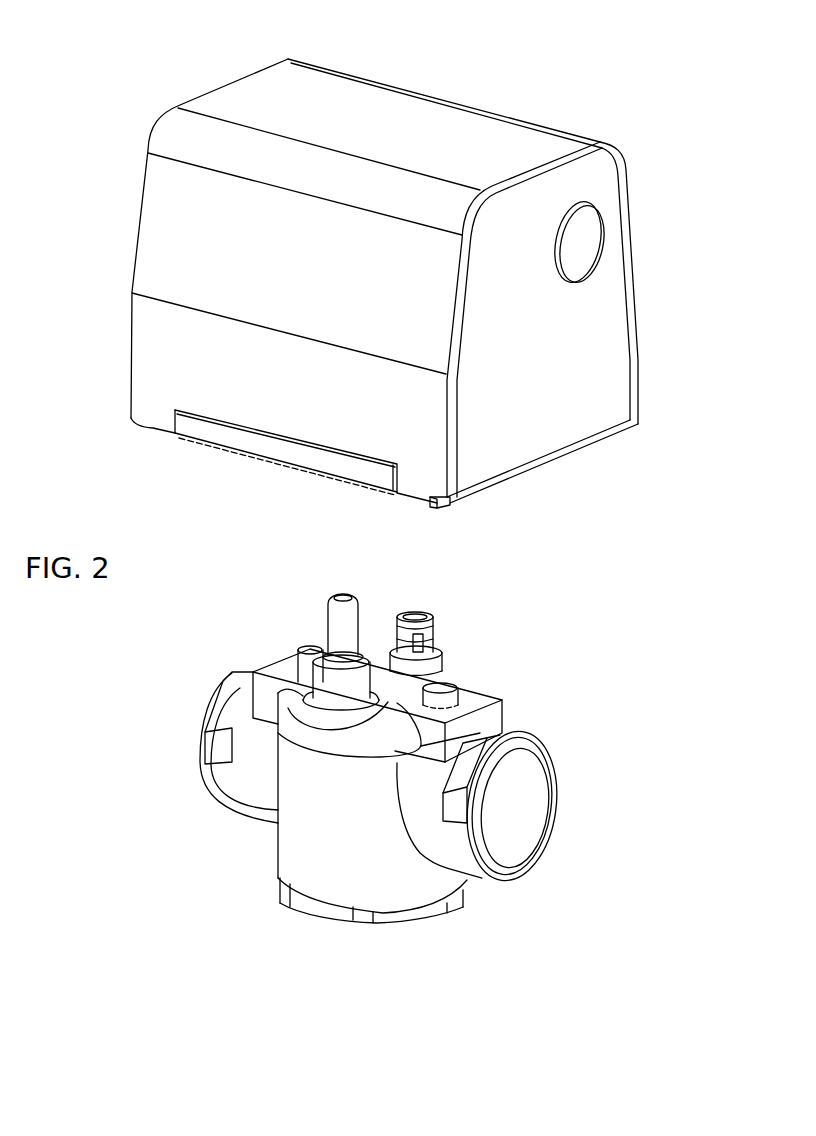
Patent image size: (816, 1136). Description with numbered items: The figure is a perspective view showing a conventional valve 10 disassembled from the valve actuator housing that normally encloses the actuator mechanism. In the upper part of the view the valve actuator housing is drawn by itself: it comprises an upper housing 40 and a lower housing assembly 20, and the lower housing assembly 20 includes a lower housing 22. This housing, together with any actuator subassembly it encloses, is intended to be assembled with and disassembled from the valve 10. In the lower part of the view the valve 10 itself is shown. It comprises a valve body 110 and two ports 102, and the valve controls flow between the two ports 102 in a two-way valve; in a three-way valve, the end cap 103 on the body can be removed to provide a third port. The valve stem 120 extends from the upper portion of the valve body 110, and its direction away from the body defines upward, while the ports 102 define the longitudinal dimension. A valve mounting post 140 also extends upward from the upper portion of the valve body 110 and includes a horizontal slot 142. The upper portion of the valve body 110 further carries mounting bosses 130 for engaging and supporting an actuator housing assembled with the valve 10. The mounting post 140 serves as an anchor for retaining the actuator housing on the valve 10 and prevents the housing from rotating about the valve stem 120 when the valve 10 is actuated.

The valve 10 is at (368, 786).
The lower housing assembly 20 is at (417, 291).
The lower housing 22 is at (590, 443).
The upper housing 40 is at (453, 134).
The ports 102 is at (160, 711).
The end cap 103 is at (318, 912).
The valve body 110 is at (320, 827).
The valve stem 120 is at (343, 623).
The mounting bosses 130 is at (310, 650).
The valve mounting post 140 is at (413, 617).
The horizontal slot 142 is at (413, 642).